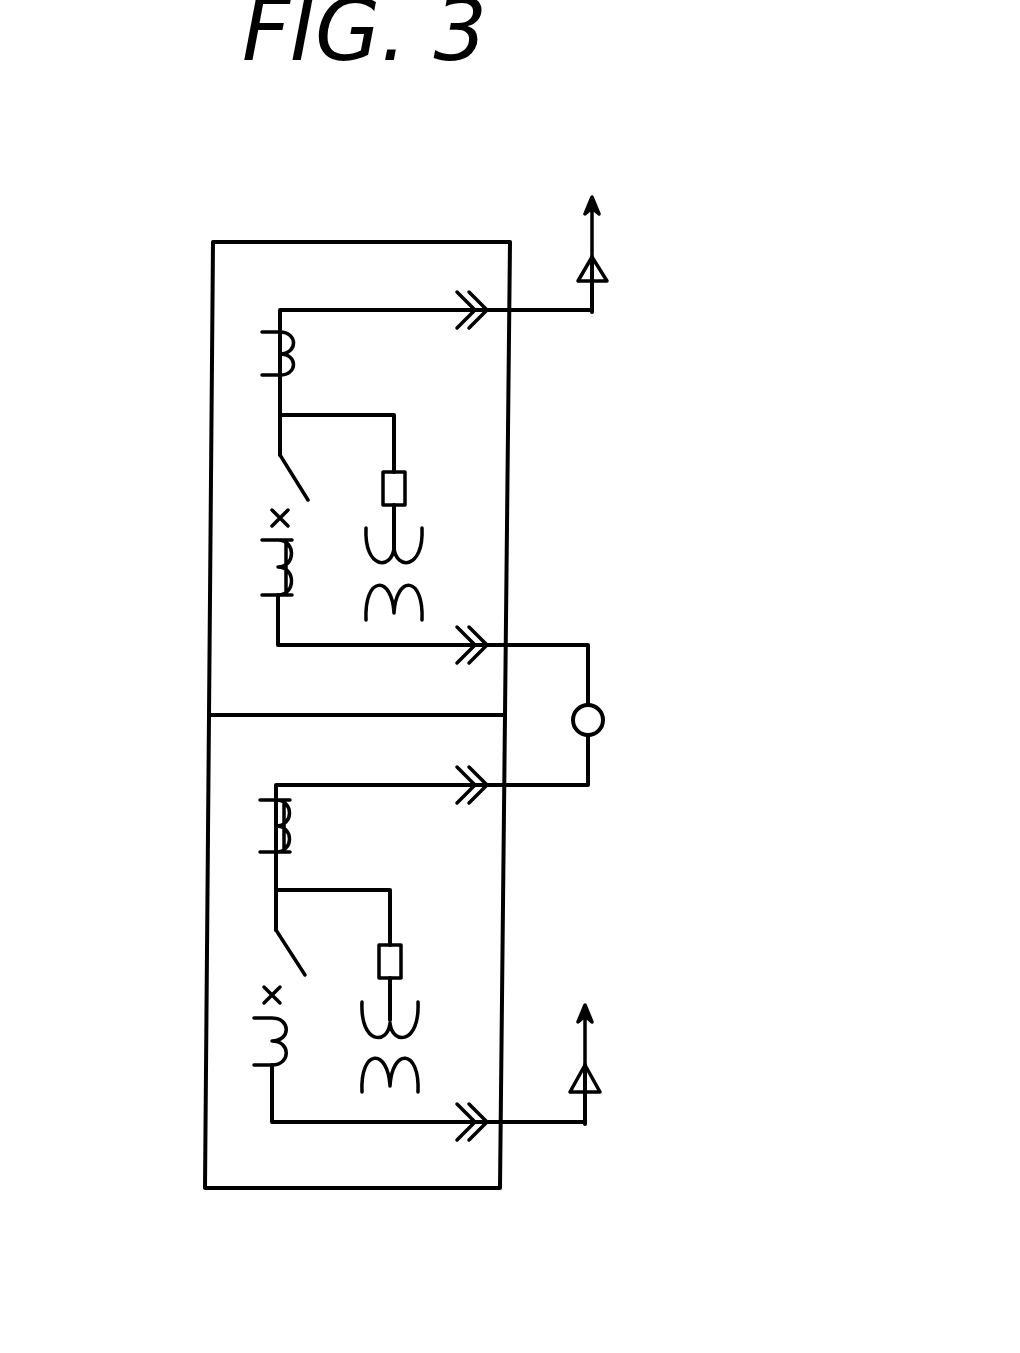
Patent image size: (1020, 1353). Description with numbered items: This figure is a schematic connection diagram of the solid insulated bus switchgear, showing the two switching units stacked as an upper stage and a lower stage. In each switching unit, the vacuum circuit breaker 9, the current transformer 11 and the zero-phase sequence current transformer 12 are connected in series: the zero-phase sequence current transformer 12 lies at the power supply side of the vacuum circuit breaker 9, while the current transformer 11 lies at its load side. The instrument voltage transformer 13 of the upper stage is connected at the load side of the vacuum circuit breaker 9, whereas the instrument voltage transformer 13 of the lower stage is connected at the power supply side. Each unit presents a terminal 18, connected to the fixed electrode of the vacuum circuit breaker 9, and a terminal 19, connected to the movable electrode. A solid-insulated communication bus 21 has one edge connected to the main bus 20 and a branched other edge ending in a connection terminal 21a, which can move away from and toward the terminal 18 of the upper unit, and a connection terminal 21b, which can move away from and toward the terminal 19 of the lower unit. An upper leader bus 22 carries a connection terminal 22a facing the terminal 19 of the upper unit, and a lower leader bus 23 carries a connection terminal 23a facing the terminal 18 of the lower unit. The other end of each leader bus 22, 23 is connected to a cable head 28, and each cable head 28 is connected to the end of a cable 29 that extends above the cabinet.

The vacuum circuit breaker 9 is at (283, 487).
The current transformer 11 is at (265, 355).
The zero-phase sequence current transformer 12 is at (270, 568).
The instrument voltage transformer 13 is at (425, 570).
The terminal 18 is at (457, 658).
The terminal 19 is at (465, 298).
The main bus 20 is at (607, 718).
The communication bus 21 is at (593, 652).
The connection terminal 21a is at (490, 636).
The connection terminal 21b is at (480, 798).
The upper leader bus 22 is at (573, 311).
The connection terminal 22a is at (485, 297).
The lower leader bus 23 is at (565, 1124).
The connection terminal 23a is at (473, 1130).
The cable head 28 is at (608, 268).
The cable 29 is at (604, 201).